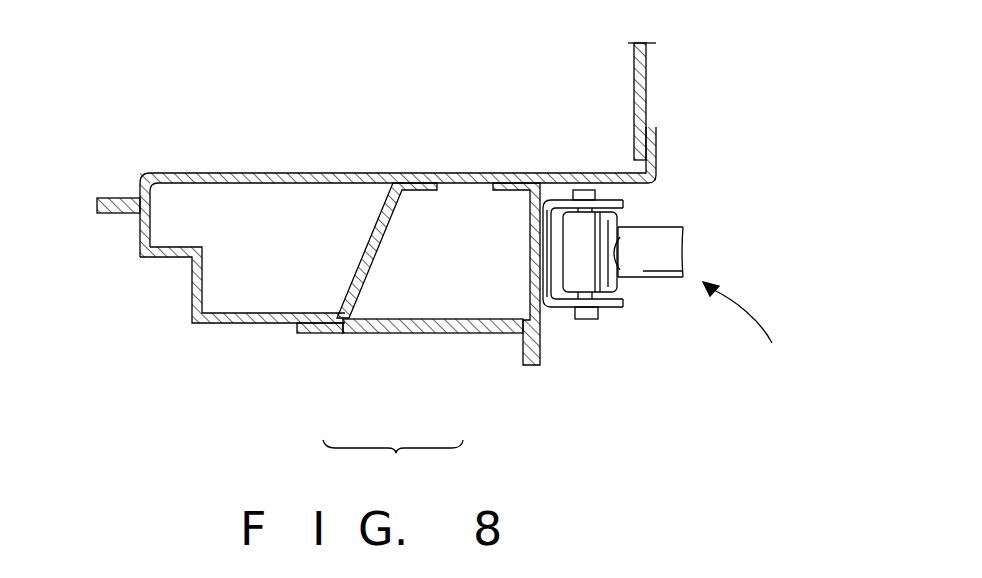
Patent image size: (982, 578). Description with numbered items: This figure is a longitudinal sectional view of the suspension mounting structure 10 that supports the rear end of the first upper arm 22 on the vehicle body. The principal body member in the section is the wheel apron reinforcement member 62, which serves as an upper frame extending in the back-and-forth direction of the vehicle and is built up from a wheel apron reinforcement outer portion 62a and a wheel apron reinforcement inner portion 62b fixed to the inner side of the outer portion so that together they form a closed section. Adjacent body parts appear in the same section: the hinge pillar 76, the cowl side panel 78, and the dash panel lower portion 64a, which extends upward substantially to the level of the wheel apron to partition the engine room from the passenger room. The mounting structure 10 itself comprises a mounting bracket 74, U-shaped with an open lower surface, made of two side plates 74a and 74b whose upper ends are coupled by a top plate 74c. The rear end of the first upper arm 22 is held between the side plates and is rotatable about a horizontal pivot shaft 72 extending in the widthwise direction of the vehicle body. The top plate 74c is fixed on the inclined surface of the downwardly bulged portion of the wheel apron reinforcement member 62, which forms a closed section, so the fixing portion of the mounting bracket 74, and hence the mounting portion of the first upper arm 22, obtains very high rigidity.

The mounting structure 10 is at (754, 323).
The first upper arm 22 is at (657, 278).
The wheel apron reinforcement member 62 is at (393, 464).
The wheel apron reinforcement outer portion 62a is at (400, 333).
The wheel apron reinforcement inner portion 62b is at (460, 333).
The dash panel lower portion 64a is at (648, 93).
The horizontal pivot shaft 72 is at (591, 319).
The mounting bracket 74 is at (565, 309).
The side plate 74a is at (617, 307).
The side plate 74b is at (623, 203).
The top plate 74c is at (546, 243).
The hinge pillar 76 is at (190, 283).
The cowl side panel 78 is at (257, 173).